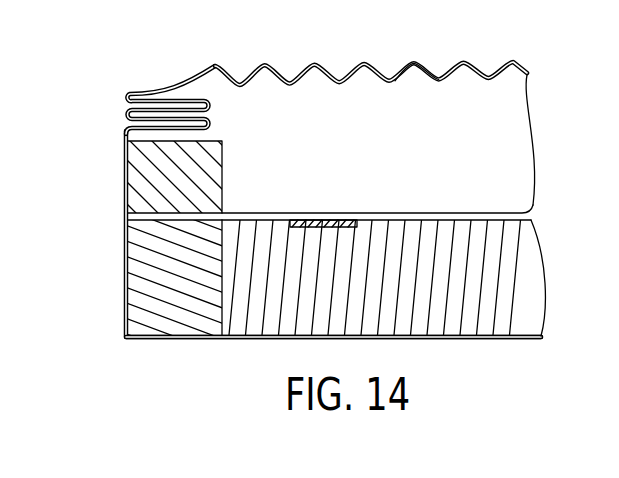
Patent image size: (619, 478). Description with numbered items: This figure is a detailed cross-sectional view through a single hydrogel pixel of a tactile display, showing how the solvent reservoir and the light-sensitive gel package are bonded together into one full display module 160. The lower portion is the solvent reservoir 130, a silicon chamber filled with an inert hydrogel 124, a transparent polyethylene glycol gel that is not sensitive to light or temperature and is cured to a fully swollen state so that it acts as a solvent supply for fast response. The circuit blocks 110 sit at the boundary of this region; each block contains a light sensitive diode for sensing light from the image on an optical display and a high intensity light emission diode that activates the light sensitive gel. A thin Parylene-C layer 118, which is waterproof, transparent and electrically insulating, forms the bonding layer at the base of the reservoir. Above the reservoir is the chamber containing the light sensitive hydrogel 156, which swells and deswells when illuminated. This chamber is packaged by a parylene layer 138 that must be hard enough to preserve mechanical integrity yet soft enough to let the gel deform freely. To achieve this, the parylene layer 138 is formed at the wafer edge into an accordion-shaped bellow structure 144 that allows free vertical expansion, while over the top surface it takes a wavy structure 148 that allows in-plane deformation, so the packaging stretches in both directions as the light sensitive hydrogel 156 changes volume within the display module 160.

The circuit blocks 110 is at (338, 219).
The Parylene-C layer 118 is at (333, 339).
The inert hydrogel 124 is at (533, 280).
The solvent reservoir 130 is at (136, 283).
The parylene layer 138 is at (340, 80).
The bellow structure 144 is at (124, 100).
The wavy structure 148 is at (423, 62).
The light sensitive hydrogel 156 is at (520, 113).
The display module 160 is at (108, 242).